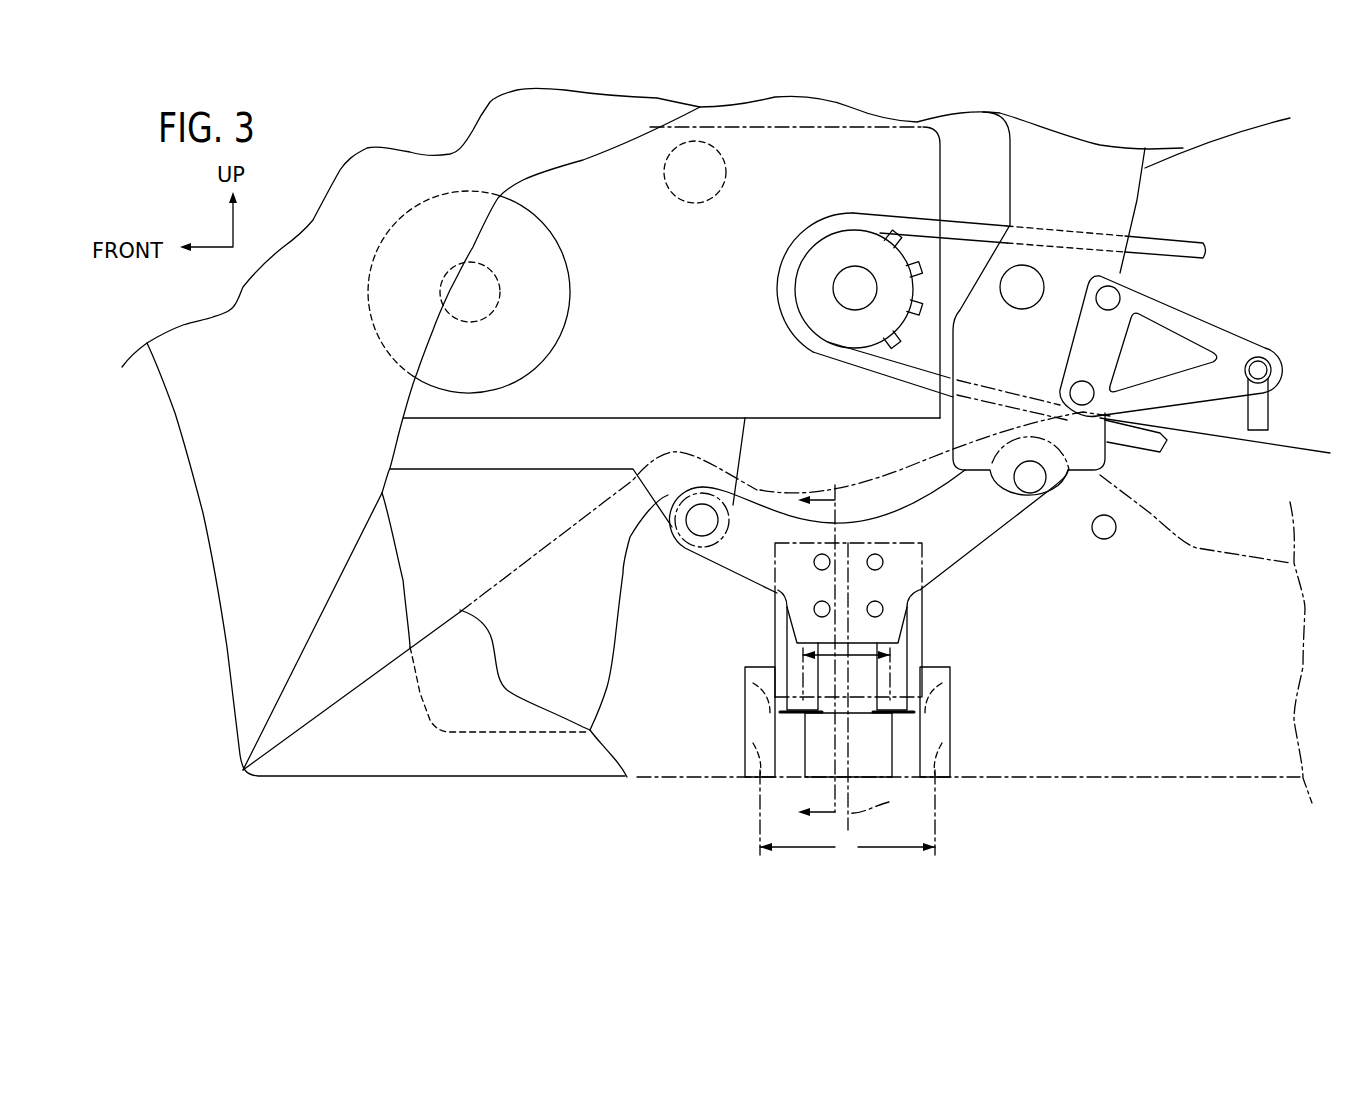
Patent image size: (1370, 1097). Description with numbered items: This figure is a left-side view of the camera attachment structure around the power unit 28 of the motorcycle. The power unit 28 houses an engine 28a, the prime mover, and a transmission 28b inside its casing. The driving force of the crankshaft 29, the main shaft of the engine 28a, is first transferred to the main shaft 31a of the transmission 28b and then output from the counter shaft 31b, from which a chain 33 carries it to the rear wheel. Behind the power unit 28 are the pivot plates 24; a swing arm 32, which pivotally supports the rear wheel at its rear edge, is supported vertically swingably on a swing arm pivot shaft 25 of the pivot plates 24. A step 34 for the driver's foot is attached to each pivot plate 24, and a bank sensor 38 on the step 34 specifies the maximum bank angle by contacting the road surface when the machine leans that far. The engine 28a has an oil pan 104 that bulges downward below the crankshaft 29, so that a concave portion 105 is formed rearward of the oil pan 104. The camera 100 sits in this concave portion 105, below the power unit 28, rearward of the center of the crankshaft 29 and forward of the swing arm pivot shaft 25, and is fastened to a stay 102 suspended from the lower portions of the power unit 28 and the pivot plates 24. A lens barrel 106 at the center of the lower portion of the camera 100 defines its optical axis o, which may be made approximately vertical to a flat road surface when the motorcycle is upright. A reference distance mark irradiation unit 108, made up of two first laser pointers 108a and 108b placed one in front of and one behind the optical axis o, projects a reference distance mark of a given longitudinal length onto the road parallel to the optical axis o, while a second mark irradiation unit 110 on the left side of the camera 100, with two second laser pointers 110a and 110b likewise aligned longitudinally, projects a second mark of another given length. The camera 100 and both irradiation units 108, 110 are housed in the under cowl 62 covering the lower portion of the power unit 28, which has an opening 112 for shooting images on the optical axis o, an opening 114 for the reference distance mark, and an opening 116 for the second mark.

The pivot plates 24 is at (1107, 200).
The swing arm pivot shaft 25 is at (1020, 300).
The power unit 28 is at (500, 382).
The engine 28a is at (527, 600).
The transmission 28b is at (806, 368).
The crankshaft 29 is at (500, 280).
The main shaft 31a is at (727, 166).
The counter shaft 31b is at (833, 288).
The swing arm 32 is at (1222, 414).
The chain 33 is at (970, 228).
The steps 34 is at (1270, 366).
The bank sensor 38 is at (1272, 406).
The under cowl 62 is at (1093, 765).
The camera 100 is at (845, 683).
The stay 102 is at (988, 530).
The oil pan 104 is at (610, 592).
The concave portion 105 is at (814, 481).
The lens barrel 106 is at (813, 743).
The reference distance mark irradiation unit 108 is at (744, 784).
The first laser pointer 108a is at (760, 672).
The first laser pointer 108b is at (937, 673).
The second mark irradiation unit 110 is at (834, 662).
The second laser pointer 110a is at (795, 652).
The second laser pointer 110b is at (902, 652).
The opening 112 is at (893, 743).
The opening 114 is at (767, 767).
The opening 116 is at (787, 727).